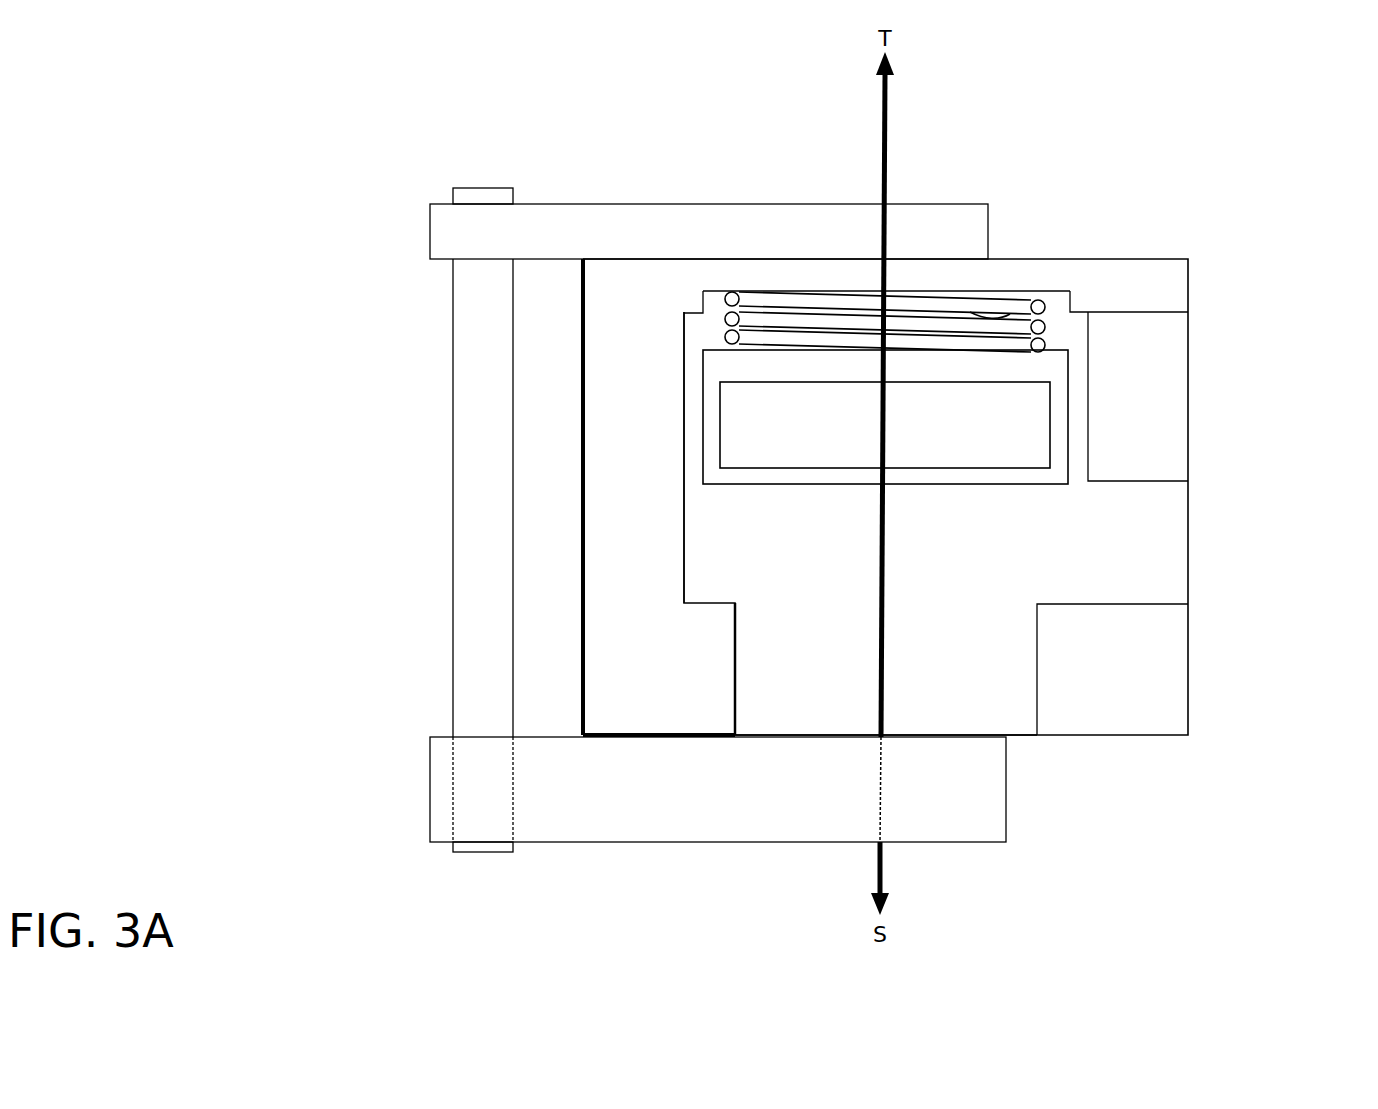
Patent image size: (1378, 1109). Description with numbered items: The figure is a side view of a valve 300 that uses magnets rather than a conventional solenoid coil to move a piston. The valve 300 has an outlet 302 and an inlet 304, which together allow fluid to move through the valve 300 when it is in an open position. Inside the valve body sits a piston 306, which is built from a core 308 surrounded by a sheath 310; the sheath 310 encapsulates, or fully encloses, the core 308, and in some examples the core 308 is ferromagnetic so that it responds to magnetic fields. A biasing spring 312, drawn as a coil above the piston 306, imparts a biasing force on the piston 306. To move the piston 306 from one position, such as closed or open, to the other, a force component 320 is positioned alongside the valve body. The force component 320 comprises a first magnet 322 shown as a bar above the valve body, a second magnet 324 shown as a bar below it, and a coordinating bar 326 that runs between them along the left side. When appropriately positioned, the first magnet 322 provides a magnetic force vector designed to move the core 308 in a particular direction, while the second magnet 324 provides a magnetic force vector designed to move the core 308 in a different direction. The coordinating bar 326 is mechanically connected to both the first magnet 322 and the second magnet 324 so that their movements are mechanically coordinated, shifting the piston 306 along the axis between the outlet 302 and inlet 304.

The valve 300 is at (1250, 70).
The outlet 302 is at (1157, 530).
The inlet 304 is at (984, 700).
The piston 306 is at (1085, 403).
The core 308 is at (747, 402).
The sheath 310 is at (715, 399).
The biasing spring 312 is at (1045, 302).
The force component 320 is at (428, 376).
The first magnet 322 is at (633, 204).
The second magnet 324 is at (935, 810).
The coordinating bar 326 is at (478, 188).